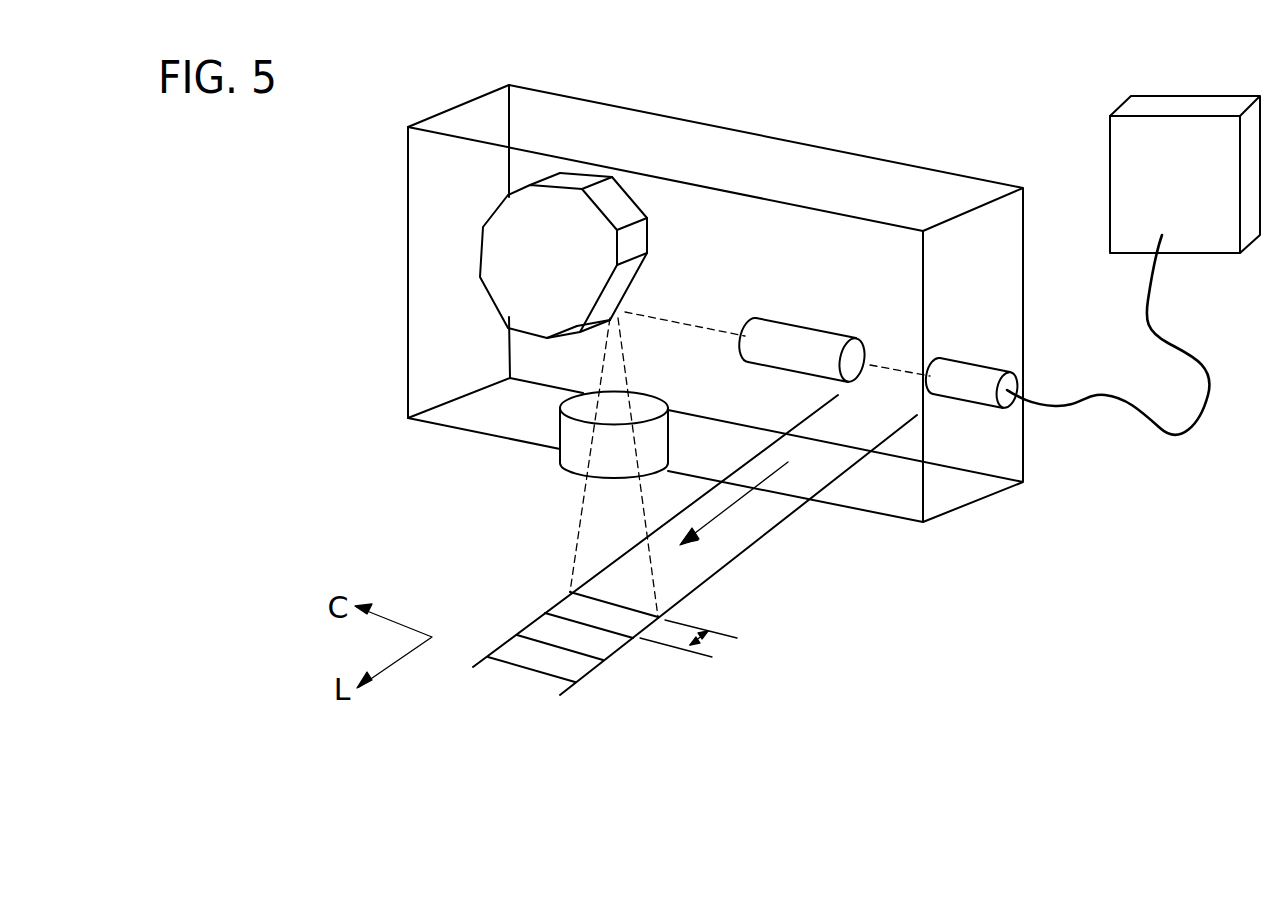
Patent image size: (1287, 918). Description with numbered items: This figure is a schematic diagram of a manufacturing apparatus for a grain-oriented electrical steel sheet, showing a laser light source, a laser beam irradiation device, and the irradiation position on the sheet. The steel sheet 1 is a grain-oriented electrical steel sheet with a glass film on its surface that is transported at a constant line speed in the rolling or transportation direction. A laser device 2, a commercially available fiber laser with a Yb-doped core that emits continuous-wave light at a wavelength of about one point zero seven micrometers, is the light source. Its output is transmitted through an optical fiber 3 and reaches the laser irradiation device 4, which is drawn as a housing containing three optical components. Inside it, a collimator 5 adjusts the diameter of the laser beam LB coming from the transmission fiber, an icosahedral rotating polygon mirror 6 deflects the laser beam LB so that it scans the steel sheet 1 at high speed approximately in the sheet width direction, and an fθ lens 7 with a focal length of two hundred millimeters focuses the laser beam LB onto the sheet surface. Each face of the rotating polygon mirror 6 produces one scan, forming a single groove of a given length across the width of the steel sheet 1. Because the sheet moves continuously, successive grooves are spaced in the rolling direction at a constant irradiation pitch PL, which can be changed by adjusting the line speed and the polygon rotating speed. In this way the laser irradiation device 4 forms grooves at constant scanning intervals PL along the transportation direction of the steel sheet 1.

The grain-oriented electrical steel sheet 1 is at (725, 581).
The laser device 2 is at (1122, 106).
The optical fiber 3 is at (1150, 418).
The laser irradiation device 4 is at (458, 106).
The collimator 5 is at (810, 327).
The rotating polygon mirror 6 is at (500, 262).
The fθ lens 7 is at (580, 437).
The laser beam LB is at (688, 326).
The irradiation pitch PL is at (697, 649).